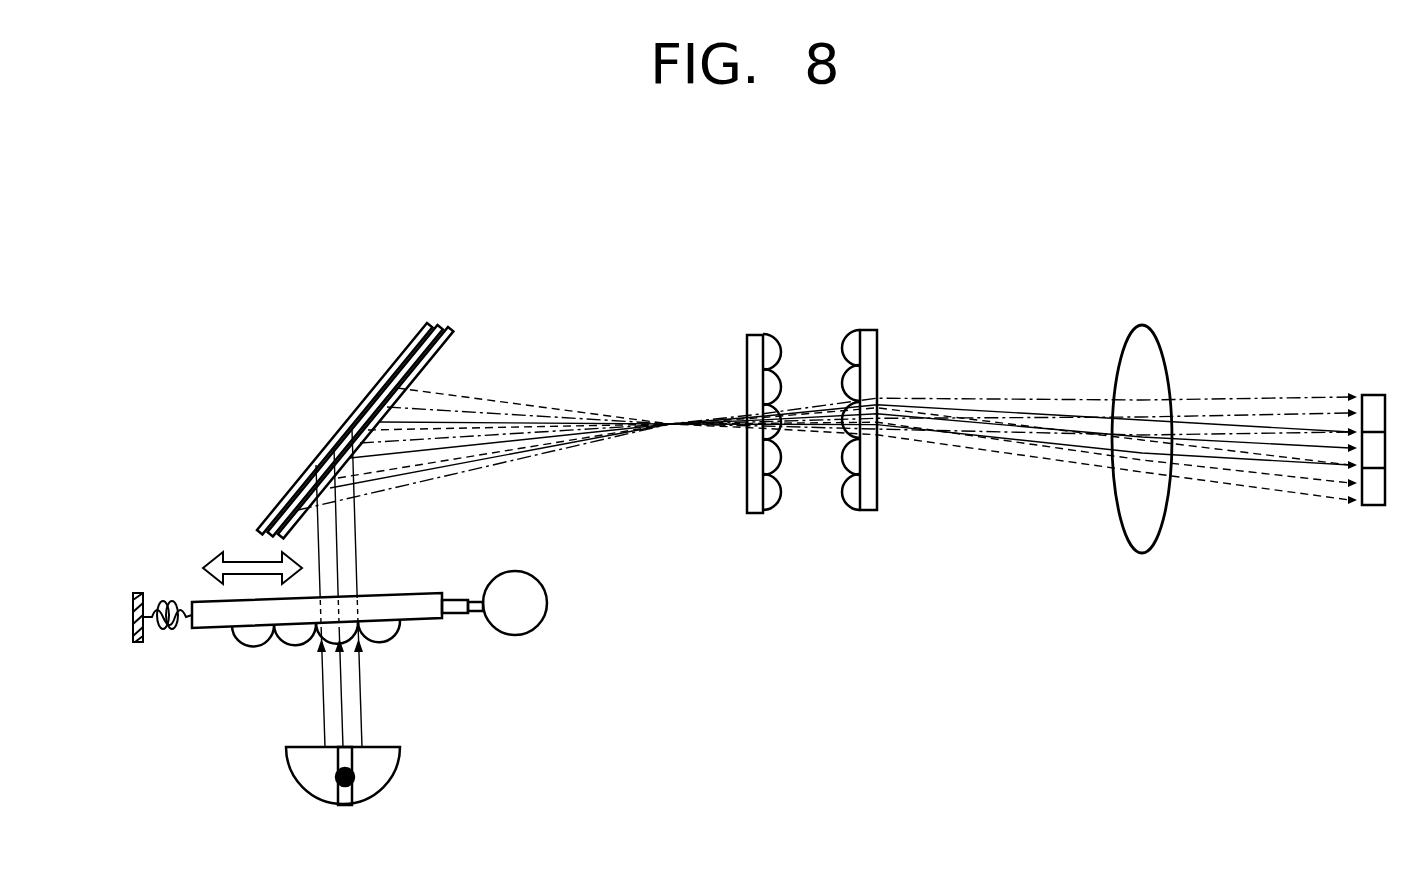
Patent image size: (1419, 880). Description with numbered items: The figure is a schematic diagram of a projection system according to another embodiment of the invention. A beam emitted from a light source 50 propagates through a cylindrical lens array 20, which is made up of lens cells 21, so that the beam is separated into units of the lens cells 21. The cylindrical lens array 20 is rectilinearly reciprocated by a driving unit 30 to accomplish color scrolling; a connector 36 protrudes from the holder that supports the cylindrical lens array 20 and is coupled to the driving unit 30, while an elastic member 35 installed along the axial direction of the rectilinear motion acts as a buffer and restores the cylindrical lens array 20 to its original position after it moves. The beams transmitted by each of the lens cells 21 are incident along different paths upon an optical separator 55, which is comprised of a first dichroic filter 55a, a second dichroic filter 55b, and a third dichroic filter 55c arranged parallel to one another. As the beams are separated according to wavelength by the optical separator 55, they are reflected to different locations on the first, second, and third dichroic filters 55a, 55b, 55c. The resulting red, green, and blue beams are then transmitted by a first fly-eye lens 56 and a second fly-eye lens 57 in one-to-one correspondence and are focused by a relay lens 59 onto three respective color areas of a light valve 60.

The cylindrical lens array 20 is at (428, 622).
The lens cells 21 is at (380, 641).
The driving unit 30 is at (527, 662).
The elastic member 35 is at (170, 632).
The connector 36 is at (458, 598).
The light source 50 is at (345, 806).
The optical separator 55 is at (381, 362).
The first dichroic filter 55a is at (378, 243).
The second dichroic filter 55b is at (436, 325).
The third dichroic filter 55c is at (420, 328).
The first fly-eye lens 56 is at (757, 514).
The second fly-eye lens 57 is at (873, 511).
The relay lens 59 is at (1138, 326).
The light valve 60 is at (1378, 372).